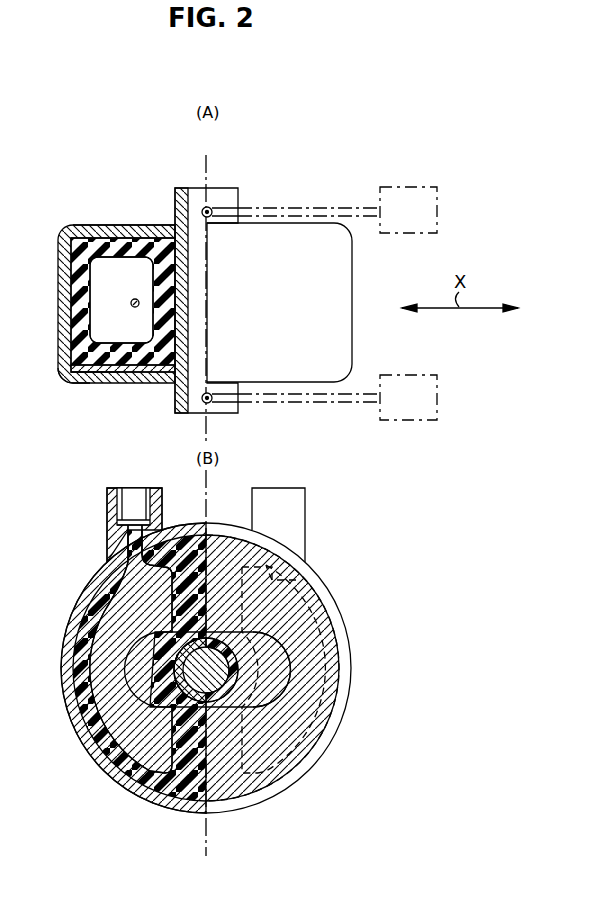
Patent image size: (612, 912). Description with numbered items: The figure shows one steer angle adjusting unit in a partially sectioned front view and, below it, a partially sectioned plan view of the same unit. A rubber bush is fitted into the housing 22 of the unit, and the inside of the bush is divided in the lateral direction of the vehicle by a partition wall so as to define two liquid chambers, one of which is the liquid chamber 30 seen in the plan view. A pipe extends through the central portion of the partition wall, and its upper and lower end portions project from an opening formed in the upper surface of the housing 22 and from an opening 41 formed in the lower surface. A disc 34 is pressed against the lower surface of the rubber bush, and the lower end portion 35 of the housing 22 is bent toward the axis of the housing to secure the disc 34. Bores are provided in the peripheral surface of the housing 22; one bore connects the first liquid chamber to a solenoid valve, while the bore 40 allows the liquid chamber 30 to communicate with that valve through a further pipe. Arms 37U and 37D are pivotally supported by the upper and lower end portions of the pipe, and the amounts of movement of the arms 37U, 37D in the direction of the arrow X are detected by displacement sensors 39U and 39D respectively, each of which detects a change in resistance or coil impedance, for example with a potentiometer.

The housing 22 is at (354, 278).
The liquid chamber 30 is at (283, 744).
The disc 34 is at (114, 373).
The lower end portion 35 is at (66, 384).
The arm 37U is at (337, 204).
The arm 37D is at (333, 406).
The displacement sensor 39U is at (414, 184).
The displacement sensor 39D is at (398, 373).
The bore 40 is at (298, 578).
The opening 41 is at (86, 376).